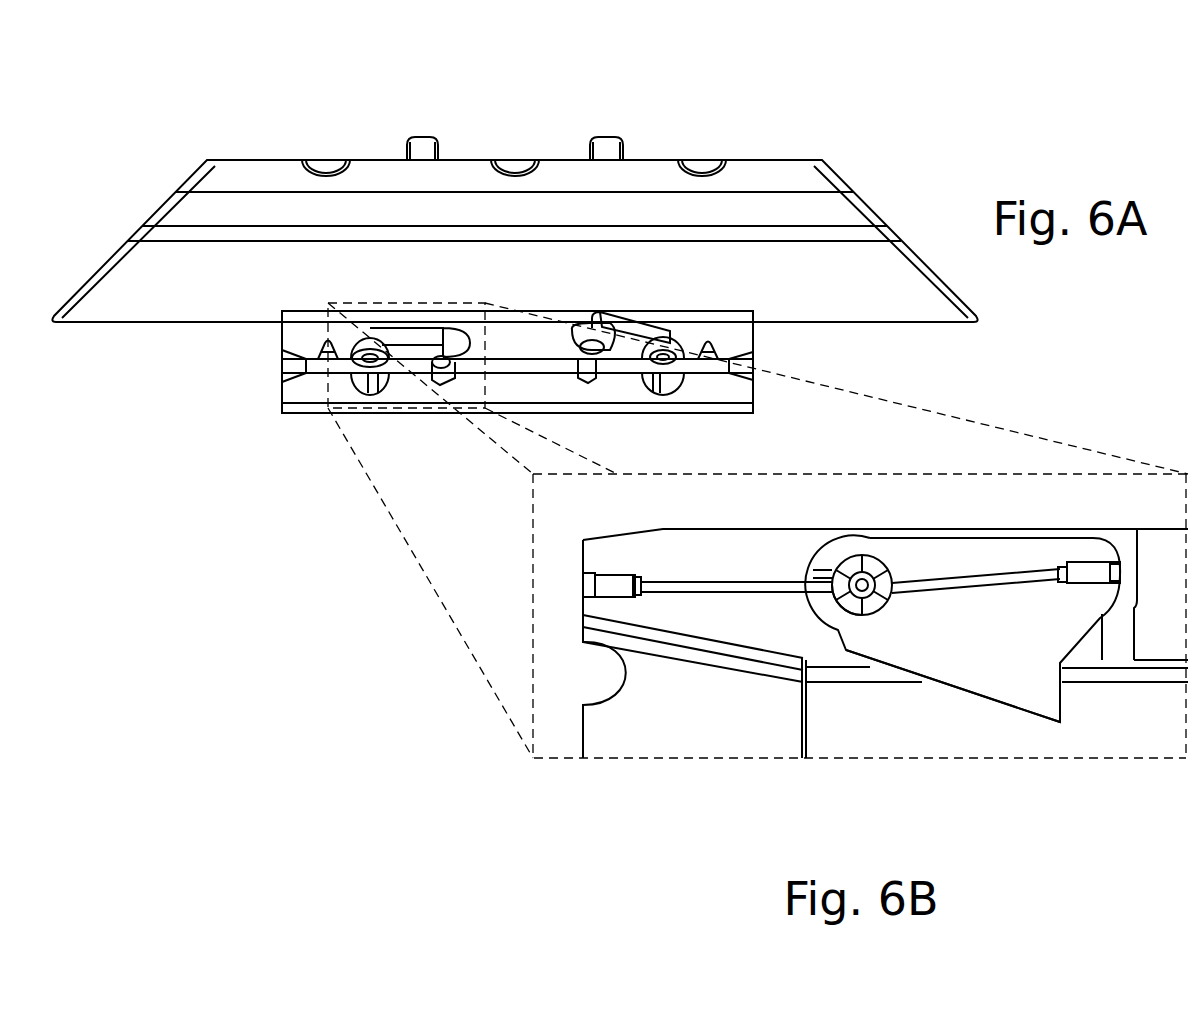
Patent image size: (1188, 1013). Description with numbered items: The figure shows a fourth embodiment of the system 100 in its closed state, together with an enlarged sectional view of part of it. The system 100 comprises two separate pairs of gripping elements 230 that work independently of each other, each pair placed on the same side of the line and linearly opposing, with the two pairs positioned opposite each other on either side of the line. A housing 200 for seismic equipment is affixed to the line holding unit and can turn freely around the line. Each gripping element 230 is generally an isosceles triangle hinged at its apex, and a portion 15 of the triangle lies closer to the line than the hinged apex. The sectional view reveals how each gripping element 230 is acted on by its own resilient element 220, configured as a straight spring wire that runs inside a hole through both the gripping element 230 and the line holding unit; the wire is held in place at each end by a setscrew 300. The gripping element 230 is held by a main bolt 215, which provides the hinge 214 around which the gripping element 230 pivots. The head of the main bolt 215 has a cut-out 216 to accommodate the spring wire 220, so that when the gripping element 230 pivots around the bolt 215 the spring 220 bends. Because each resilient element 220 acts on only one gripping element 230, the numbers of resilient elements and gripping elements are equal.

In FIG. 6A, the system 100 is at (200, 98).
In FIG. 6A, the gripping element 230 is at (405, 403).
In FIG. 6B, the gripping element 230 is at (980, 633).
In FIG. 6B, the housing 200 is at (560, 743).
In FIG. 6B, the resilient element 220 is at (687, 587).
In FIG. 6B, the cut-out 216 is at (813, 603).
In FIG. 6B, the main bolt 215 is at (838, 568).
In FIG. 6B, the hinge 214 is at (862, 585).
In FIG. 6B, the portion 15 is at (1048, 693).
In FIG. 6B, the setscrew 300 is at (583, 590).